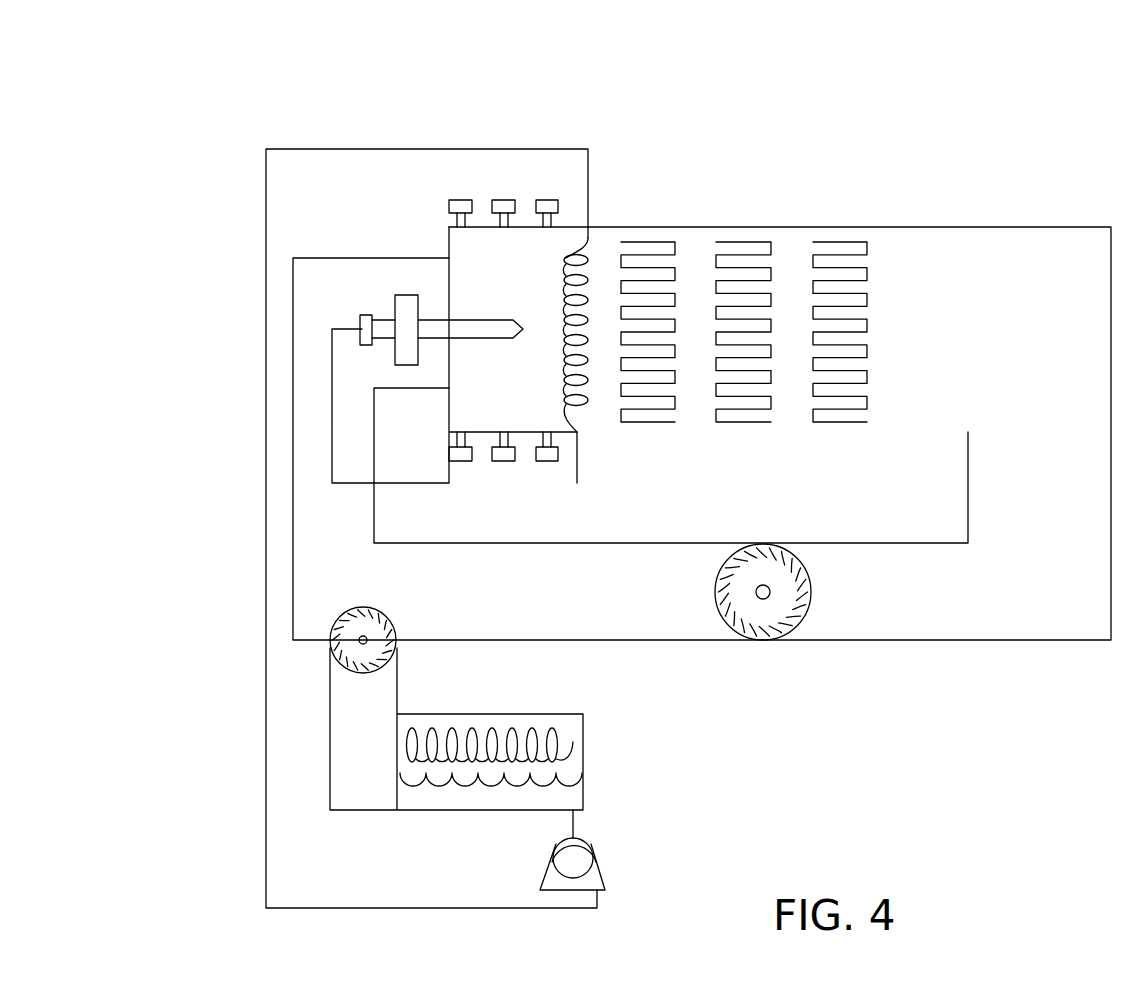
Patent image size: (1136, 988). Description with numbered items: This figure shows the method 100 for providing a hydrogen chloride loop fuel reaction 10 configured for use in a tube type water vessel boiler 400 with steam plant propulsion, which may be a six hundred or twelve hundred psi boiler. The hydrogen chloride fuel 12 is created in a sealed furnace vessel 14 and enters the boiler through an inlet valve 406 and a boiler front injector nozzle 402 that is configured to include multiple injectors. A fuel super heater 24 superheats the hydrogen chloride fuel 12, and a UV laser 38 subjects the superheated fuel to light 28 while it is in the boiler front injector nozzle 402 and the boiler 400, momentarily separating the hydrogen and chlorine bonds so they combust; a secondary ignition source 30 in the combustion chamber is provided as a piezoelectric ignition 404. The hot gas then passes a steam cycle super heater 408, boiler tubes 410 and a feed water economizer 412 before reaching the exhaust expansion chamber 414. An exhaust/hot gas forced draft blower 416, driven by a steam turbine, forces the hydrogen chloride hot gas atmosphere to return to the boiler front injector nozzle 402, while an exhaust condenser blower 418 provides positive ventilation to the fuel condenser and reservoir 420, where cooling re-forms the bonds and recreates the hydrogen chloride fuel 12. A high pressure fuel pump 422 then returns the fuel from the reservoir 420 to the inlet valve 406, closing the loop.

The hydrogen chloride loop fuel reaction 10 is at (783, 67).
The method for providing hydrogen chloride loop fuel reaction 100 is at (524, 459).
The hydrogen chloride fuel 12 is at (713, 188).
The sealed furnace vessel 14 is at (198, 325).
The super heater coil 24 is at (556, 365).
The light 28 is at (463, 200).
The secondary ignition source 30 is at (503, 200).
The UV laser 38 is at (472, 245).
The tube type water vessel boiler 400 is at (702, 371).
The boiler front injector nozzle 402 is at (470, 317).
The piezoelectric ignition 404 is at (513, 307).
The inlet valve 406 is at (357, 313).
The steam cycle super heater 408 is at (643, 228).
The boiler tubes 410 is at (742, 232).
The feed water economizer 412 is at (838, 232).
The exhaust expansion chamber 414 is at (879, 152).
The exhaust/hot gas forced draft blower 416 is at (766, 640).
The exhaust condenser blower 418 is at (380, 603).
The fuel condenser and reservoir 420 is at (598, 737).
The high pressure fuel pump 422 is at (597, 852).